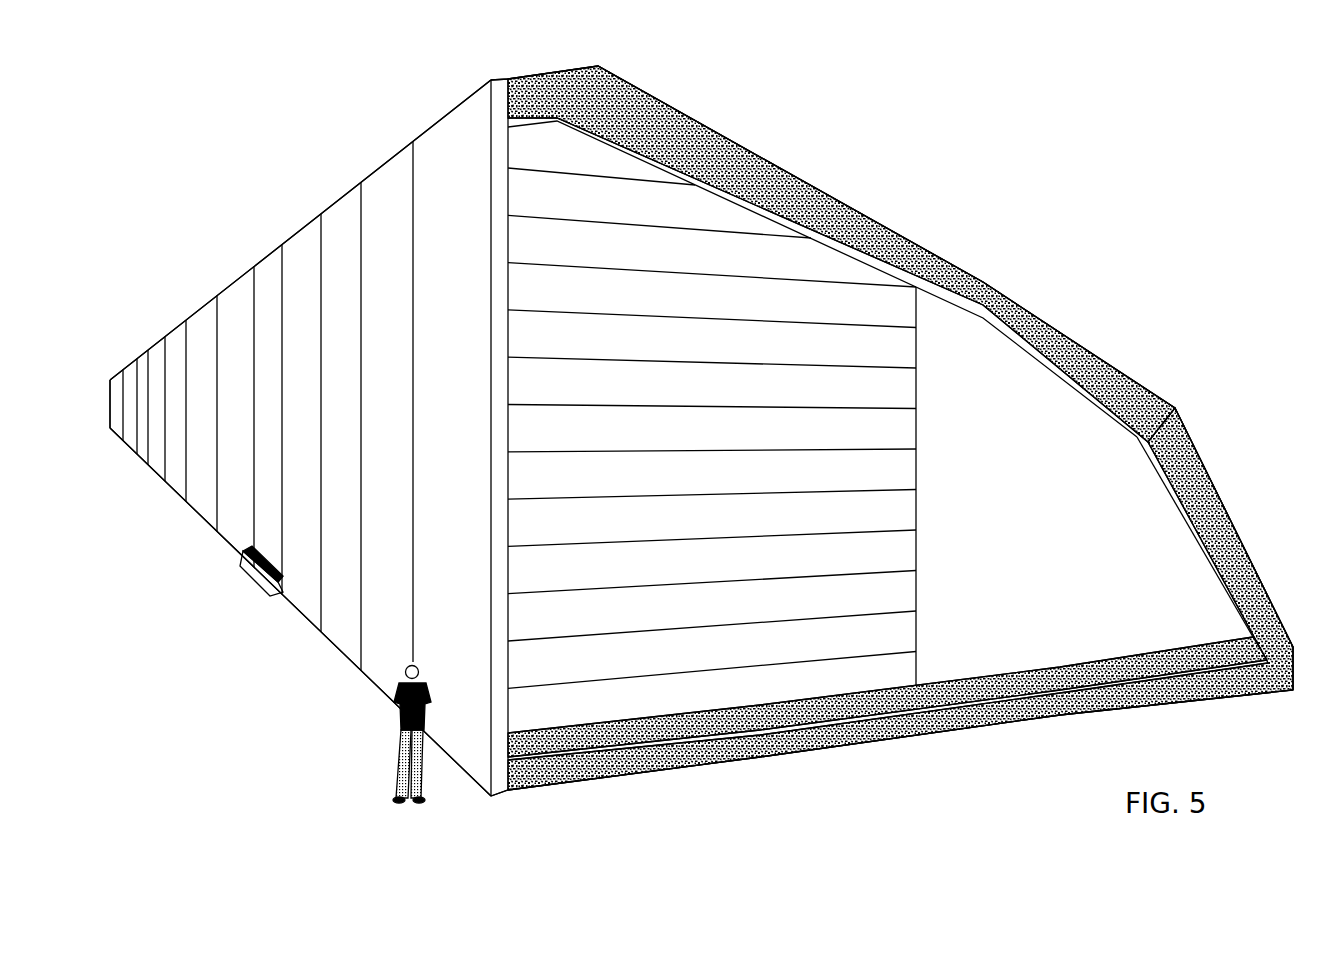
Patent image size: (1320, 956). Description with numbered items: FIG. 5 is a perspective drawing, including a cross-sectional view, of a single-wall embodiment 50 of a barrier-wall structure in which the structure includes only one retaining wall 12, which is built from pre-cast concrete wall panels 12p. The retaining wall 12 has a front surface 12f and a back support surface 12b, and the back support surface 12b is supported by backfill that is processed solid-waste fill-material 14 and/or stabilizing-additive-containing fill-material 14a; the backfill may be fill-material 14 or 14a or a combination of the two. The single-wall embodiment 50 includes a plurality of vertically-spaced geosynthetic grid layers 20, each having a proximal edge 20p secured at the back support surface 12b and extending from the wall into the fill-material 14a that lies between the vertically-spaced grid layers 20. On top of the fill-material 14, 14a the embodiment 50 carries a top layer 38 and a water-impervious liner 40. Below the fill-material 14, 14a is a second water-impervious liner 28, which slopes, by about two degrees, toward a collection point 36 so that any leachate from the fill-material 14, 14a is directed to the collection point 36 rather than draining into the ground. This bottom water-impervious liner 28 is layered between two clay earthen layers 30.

The retaining wall 12 is at (401, 366).
The pre-cast concrete wall panels 12p is at (383, 191).
The front surface 12f is at (405, 491).
The back support surface 12b is at (508, 150).
The fill-material 14 is at (985, 428).
The stabilizing-additive-containing fill-material 14a is at (586, 211).
The geosynthetic grid layers 20 is at (862, 452).
The proximal edge 20p is at (755, 428).
The water-impervious liner 28 is at (752, 737).
The clay earthen layers 30 is at (665, 737).
The collection point 36 is at (255, 583).
The top layer 38 is at (705, 140).
The water-impervious liner 40 is at (777, 207).
The single-wall embodiment 50 is at (922, 157).